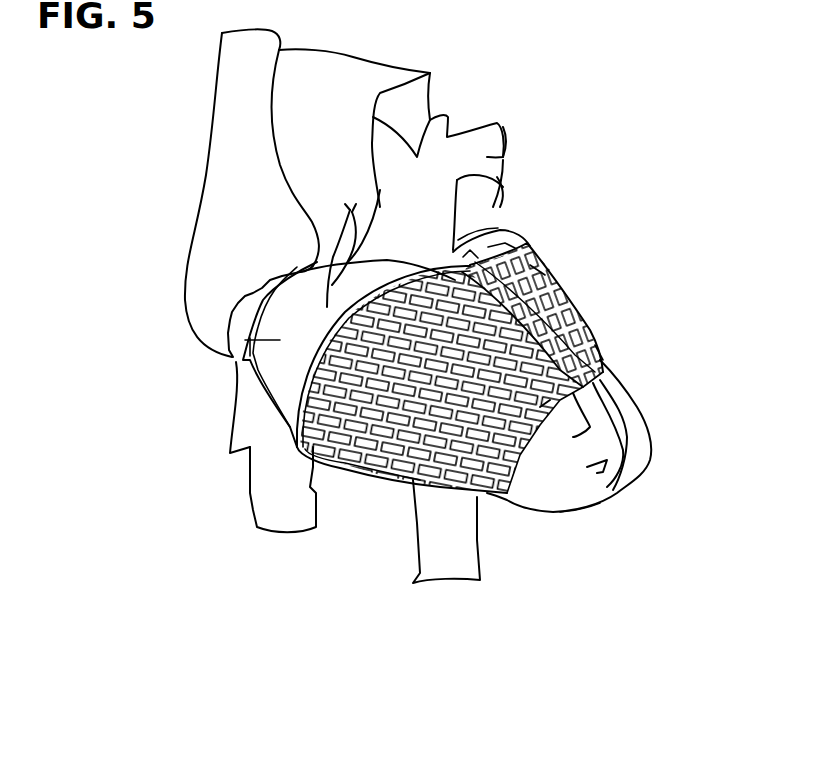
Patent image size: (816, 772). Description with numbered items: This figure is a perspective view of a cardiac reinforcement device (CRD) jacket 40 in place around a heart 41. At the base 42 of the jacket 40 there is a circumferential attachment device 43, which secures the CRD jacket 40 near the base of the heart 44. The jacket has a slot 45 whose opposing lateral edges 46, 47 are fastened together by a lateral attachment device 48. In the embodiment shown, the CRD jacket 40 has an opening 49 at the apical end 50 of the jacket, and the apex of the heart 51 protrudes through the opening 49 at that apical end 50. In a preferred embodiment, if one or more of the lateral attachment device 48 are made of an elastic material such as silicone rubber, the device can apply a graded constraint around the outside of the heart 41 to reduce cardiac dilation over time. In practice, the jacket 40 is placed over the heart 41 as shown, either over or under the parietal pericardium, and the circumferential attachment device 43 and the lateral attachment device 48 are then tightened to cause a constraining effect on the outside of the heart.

The CRD jacket 40 is at (443, 370).
The heart 41 is at (245, 355).
The base of the jacket 42 is at (537, 257).
The circumferential attachment device 43 is at (500, 245).
The base of the heart 44 is at (490, 228).
The slot 45 is at (463, 257).
The lateral edge 46 is at (545, 272).
The lateral edge 47 is at (413, 287).
The lateral attachment device 48 is at (567, 303).
The opening 49 is at (503, 457).
The apical end of the jacket 50 is at (607, 353).
The apex of the heart 51 is at (593, 500).